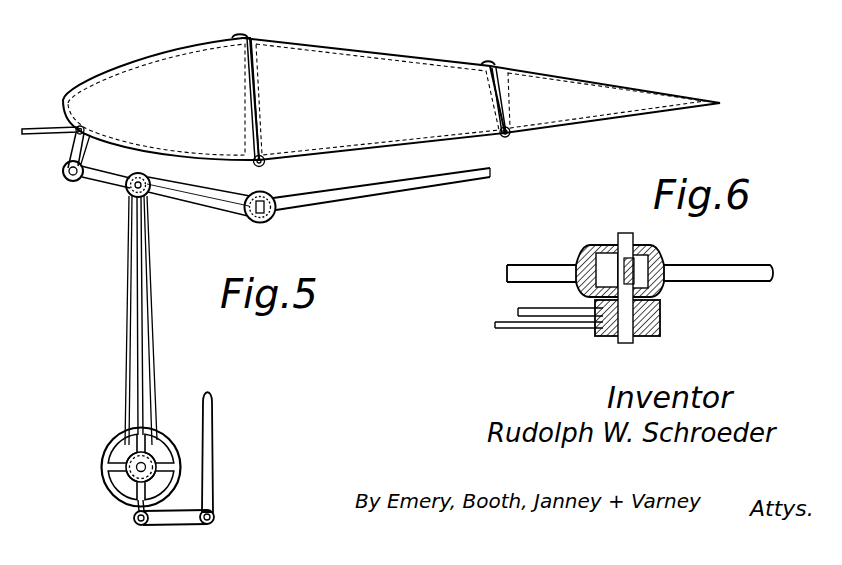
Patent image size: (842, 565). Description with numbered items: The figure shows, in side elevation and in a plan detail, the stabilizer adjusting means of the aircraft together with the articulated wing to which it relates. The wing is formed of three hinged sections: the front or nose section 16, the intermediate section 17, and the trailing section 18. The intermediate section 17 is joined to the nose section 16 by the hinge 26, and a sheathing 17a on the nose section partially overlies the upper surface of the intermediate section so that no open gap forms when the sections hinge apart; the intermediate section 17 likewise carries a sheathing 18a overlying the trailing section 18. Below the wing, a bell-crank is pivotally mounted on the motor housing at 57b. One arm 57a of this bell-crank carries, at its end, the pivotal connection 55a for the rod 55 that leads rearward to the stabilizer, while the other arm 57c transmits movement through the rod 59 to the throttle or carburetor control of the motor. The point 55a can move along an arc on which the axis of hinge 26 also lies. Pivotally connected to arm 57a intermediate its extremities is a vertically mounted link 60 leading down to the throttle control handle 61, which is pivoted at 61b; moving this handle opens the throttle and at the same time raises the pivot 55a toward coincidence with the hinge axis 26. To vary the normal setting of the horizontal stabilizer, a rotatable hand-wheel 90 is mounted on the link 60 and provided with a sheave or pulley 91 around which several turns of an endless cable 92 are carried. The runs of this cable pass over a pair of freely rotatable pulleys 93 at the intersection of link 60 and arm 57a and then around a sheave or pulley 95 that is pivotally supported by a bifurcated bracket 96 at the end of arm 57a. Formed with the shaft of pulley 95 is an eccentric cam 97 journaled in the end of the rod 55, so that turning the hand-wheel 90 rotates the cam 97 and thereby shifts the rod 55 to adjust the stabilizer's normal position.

In FIG. 5, the nose section 16 is at (163, 68).
In FIG. 5, the intermediate section 17 is at (398, 58).
In FIG. 5, the sheathing 17a is at (239, 36).
In FIG. 5, the trailing section 18 is at (616, 89).
In FIG. 5, the sheathing 18a is at (488, 64).
In FIG. 5, the hinge 26 is at (264, 164).
In FIG. 5, the rod 55 is at (391, 190).
In FIG. 6, the rod 55 is at (735, 281).
In FIG. 5, the pivotal connection 55a is at (277, 218).
In FIG. 5, the arm of bell-crank 57a is at (227, 208).
In FIG. 6, the arm of bell-crank 57a is at (540, 272).
In FIG. 5, the pivotal mounting of bell-crank 57b is at (70, 180).
In FIG. 5, the arm of bell-crank 57c is at (72, 154).
In FIG. 5, the rod 59 is at (35, 128).
In FIG. 5, the vertically mounted link 60 is at (147, 275).
In FIG. 5, the throttle control handle 61 is at (212, 421).
In FIG. 5, the pivot of throttle control handle 61b is at (214, 509).
In FIG. 5, the hand-wheel 90 is at (155, 446).
In FIG. 5, the sheave or pulley 91 is at (154, 466).
In FIG. 5, the endless cable or rope 92 is at (150, 363).
In FIG. 6, the endless cable or rope 92 is at (539, 330).
In FIG. 5, the freely rotatable pulleys 93 is at (130, 193).
In FIG. 5, the sheave or pulley 95 is at (262, 224).
In FIG. 6, the sheave or pulley 95 is at (650, 336).
In FIG. 6, the bifurcated bracket 96 is at (597, 245).
In FIG. 5, the eccentric cam 97 is at (272, 201).
In FIG. 6, the eccentric cam 97 is at (653, 253).